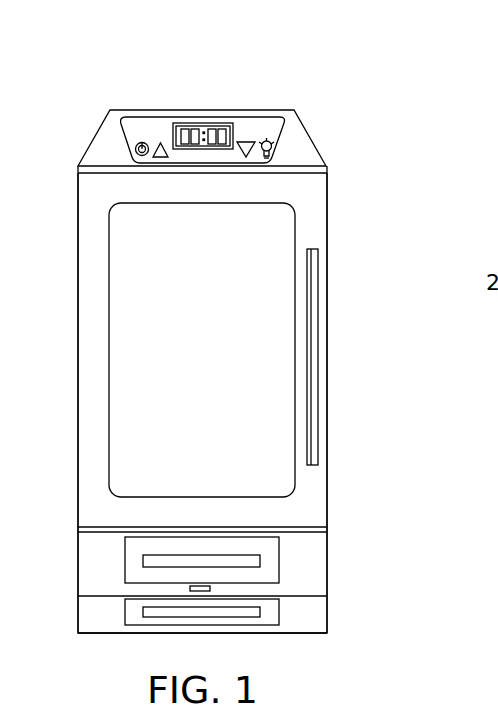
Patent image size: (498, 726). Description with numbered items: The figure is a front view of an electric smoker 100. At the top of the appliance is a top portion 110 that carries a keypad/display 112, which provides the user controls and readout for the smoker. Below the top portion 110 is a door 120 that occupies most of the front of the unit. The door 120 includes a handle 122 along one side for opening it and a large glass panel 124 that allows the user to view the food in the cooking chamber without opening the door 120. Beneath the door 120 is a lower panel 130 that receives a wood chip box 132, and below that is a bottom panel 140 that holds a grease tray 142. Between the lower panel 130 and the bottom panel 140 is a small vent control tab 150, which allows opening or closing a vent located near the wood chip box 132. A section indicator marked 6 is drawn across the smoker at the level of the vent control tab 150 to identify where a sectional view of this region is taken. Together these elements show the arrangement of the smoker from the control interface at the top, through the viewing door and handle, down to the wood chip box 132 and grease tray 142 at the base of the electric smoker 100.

The electric smoker 100 is at (96, 96).
The top portion 110 is at (313, 150).
The keypad/display 112 is at (283, 134).
The door 120 is at (327, 207).
The handle 122 is at (318, 318).
The glass panel 124 is at (224, 358).
The lower panel 130 is at (327, 538).
The wood chip box 132 is at (279, 560).
The bottom panel 140 is at (327, 612).
The grease tray 142 is at (279, 612).
The vent control tab 150 is at (205, 591).
The section line 6- 6 is at (350, 591).